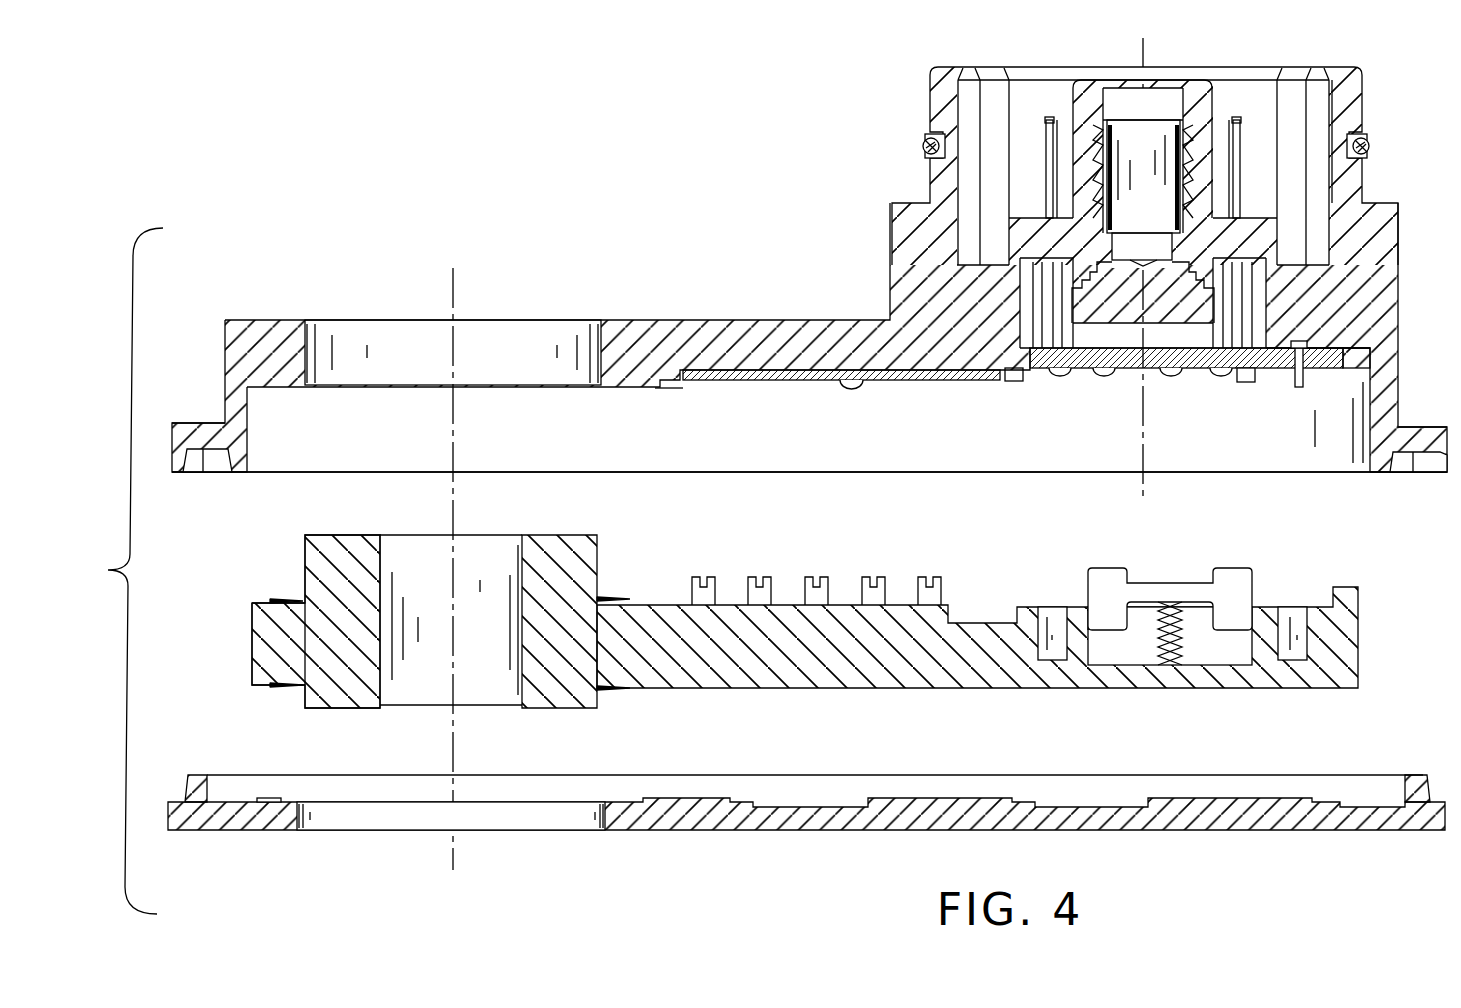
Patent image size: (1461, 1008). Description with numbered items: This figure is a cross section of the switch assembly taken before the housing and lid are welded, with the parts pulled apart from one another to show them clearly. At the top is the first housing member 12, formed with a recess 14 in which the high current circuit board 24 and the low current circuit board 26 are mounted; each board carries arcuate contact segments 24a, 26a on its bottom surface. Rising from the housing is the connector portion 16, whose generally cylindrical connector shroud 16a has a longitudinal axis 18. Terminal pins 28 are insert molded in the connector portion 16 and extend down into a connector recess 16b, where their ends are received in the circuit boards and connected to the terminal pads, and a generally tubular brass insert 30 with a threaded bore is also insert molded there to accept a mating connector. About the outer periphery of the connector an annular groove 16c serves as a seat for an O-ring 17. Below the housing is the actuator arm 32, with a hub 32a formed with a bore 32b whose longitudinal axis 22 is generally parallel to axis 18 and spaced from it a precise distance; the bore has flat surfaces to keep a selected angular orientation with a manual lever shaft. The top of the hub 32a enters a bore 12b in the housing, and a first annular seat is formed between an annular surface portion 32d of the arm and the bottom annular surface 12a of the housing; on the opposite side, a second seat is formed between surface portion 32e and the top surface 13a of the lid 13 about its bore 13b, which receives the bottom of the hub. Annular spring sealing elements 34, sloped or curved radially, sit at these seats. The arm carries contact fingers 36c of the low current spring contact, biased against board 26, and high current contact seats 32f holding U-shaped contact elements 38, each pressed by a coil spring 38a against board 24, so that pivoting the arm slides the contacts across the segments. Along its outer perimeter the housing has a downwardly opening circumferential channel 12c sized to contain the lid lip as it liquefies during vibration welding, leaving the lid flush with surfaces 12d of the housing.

The first housing member 12 is at (652, 319).
The bottom annular surface 12a is at (618, 388).
The bore 12b is at (600, 353).
The circumferential channel 12c is at (203, 474).
The surfaces 12d is at (178, 473).
The second housing member or lid 13 is at (978, 832).
The top surface 13a is at (278, 800).
The bore 13b is at (598, 815).
The recess 14 is at (990, 475).
The connector portion 16 is at (1080, 66).
The connector shroud 16a is at (1363, 103).
The connector recess 16b is at (1027, 332).
The annular groove 16c is at (926, 143).
The O-ring 17 is at (925, 150).
The longitudinal axis 18 is at (455, 493).
The longitudinal axis 22 is at (1143, 408).
The high current circuit board 24 is at (1183, 370).
The contact segments 24a is at (1104, 378).
The low current circuit board 26 is at (788, 378).
The contact segments 26a is at (913, 383).
The terminal pins 28 is at (1046, 120).
The tubular insert 30 is at (1195, 235).
The actuator arm 32 is at (1360, 640).
The hub 32a is at (335, 535).
The bore 32b is at (520, 603).
The annular surface portion 32d is at (265, 603).
The surface portion 32e is at (257, 686).
The high current contact seats 32f is at (1172, 636).
The annular spring sealing elements 34 is at (287, 600).
The contact fingers 36c is at (808, 577).
The U-shaped contact elements 38 is at (1230, 568).
The coil spring 38a is at (1157, 627).